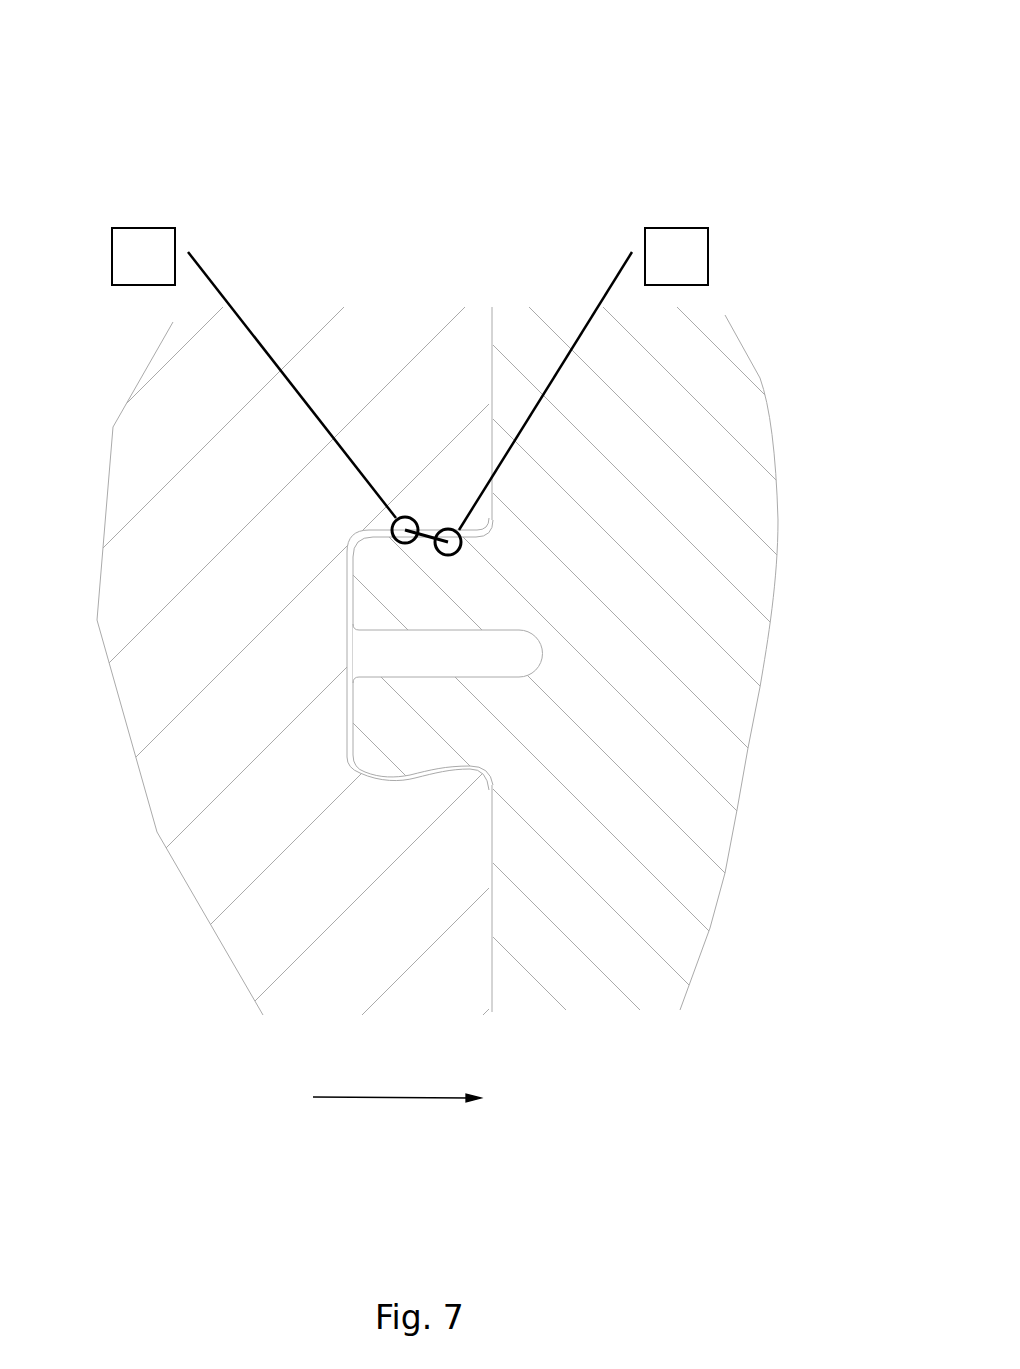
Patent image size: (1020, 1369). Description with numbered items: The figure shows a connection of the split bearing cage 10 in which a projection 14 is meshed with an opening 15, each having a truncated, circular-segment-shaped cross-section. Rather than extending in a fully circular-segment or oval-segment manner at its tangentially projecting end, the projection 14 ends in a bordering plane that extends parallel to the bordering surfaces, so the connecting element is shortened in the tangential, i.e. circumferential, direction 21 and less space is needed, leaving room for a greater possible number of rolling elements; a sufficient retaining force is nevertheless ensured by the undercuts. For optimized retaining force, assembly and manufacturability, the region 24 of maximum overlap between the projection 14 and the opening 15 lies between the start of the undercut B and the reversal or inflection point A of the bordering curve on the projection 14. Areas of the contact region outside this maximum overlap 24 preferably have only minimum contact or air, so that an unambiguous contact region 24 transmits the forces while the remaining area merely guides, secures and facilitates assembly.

The split bearing cage 10 is at (609, 80).
The projection 14 is at (423, 628).
The opening 15 is at (347, 716).
The circumferential direction 21 is at (392, 1098).
The region of maximum overlap 24 is at (430, 532).
The reversal or inflection point A is at (254, 373).
The start of the undercut B is at (583, 379).